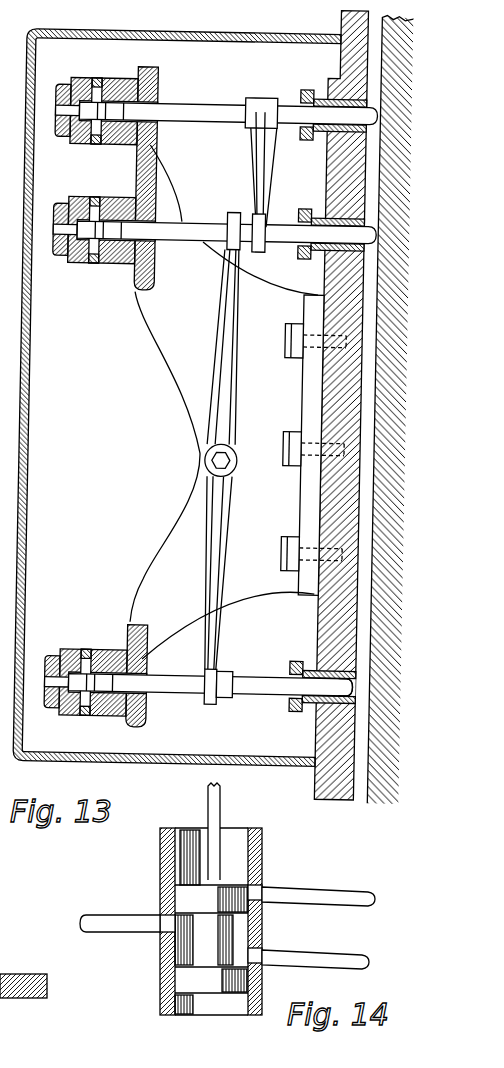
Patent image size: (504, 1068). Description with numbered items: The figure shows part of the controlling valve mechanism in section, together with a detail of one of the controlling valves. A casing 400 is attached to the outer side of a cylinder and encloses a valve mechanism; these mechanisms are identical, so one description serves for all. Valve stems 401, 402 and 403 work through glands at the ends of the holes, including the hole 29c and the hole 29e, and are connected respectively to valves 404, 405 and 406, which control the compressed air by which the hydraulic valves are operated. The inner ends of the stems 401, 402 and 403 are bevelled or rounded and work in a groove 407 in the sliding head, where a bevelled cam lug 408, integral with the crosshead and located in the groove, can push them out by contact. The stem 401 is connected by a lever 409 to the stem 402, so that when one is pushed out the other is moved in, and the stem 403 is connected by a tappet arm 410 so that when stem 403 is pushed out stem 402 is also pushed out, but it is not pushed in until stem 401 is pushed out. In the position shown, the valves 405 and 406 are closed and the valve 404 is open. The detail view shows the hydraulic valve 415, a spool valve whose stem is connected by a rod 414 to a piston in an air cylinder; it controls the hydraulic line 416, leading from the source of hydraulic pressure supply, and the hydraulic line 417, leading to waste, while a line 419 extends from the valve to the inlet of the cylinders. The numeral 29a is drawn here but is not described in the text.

In FIG. 13, the casing 400 is at (31, 473).
In FIG. 13, the valve stem 401 is at (258, 680).
In FIG. 13, the valve stem 402 is at (287, 238).
In FIG. 13, the valve stem 403 is at (290, 108).
In FIG. 13, the valve 404 is at (112, 649).
In FIG. 13, the valve 405 is at (110, 269).
In FIG. 13, the valve 406 is at (107, 79).
In FIG. 13, the groove 407 is at (372, 338).
In FIG. 13, the bevelled cam lug 408 is at (366, 700).
In FIG. 13, the lever 409 is at (228, 386).
In FIG. 13, the tappet arm 410 is at (252, 166).
In FIG. 13, the hole 29e is at (358, 118).
In FIG. 13, the middle shaft 29a is at (360, 246).
In FIG. 13, the hole 29c is at (358, 680).
In FIG. 14, the rod 414 is at (218, 805).
In FIG. 14, the hydraulic valve 415 is at (262, 857).
In FIG. 14, the hydraulic line 416 is at (328, 957).
In FIG. 14, the hydraulic line 417 is at (350, 895).
In FIG. 14, the line 419 is at (125, 915).